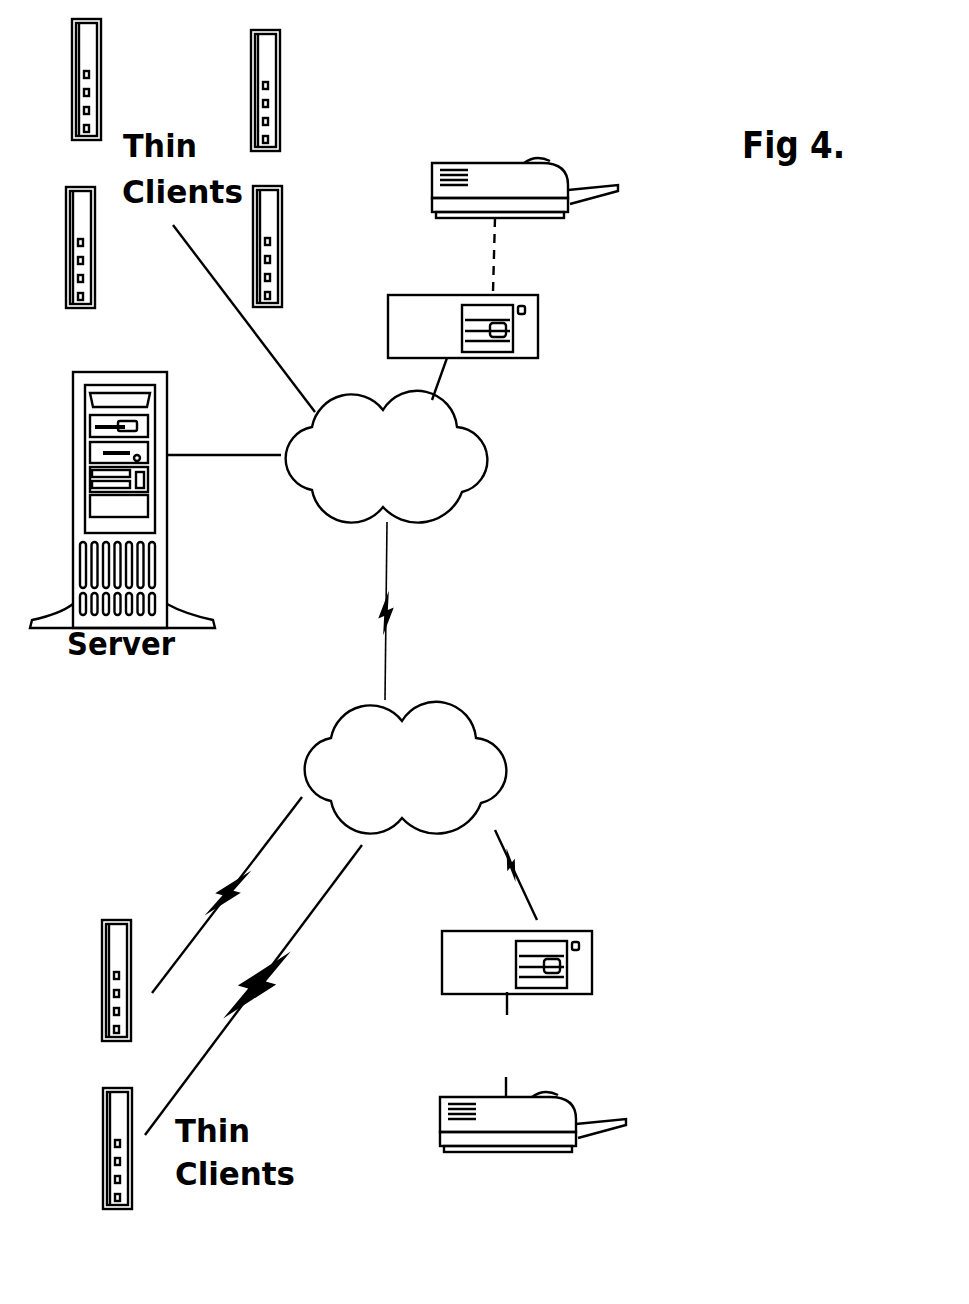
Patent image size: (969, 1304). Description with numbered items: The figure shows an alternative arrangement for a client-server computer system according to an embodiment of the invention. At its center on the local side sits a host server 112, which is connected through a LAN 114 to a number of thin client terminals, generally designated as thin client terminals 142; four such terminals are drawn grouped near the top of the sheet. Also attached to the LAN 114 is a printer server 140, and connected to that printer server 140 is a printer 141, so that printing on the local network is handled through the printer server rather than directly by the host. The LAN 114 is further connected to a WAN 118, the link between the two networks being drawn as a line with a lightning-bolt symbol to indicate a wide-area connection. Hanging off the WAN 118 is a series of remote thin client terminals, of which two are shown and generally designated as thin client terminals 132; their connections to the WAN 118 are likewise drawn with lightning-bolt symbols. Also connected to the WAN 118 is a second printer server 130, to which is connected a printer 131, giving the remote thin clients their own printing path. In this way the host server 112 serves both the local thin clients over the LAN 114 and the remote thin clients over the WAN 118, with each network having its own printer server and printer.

The host server 112 is at (157, 353).
The LAN 114 is at (512, 472).
The WAN 118 is at (512, 781).
The printer server 130 is at (622, 944).
The printer 131 is at (590, 1117).
The thin client terminals 132 is at (89, 995).
The printer server 140 is at (547, 350).
The printer 141 is at (580, 184).
The thin client terminals 142 is at (107, 93).